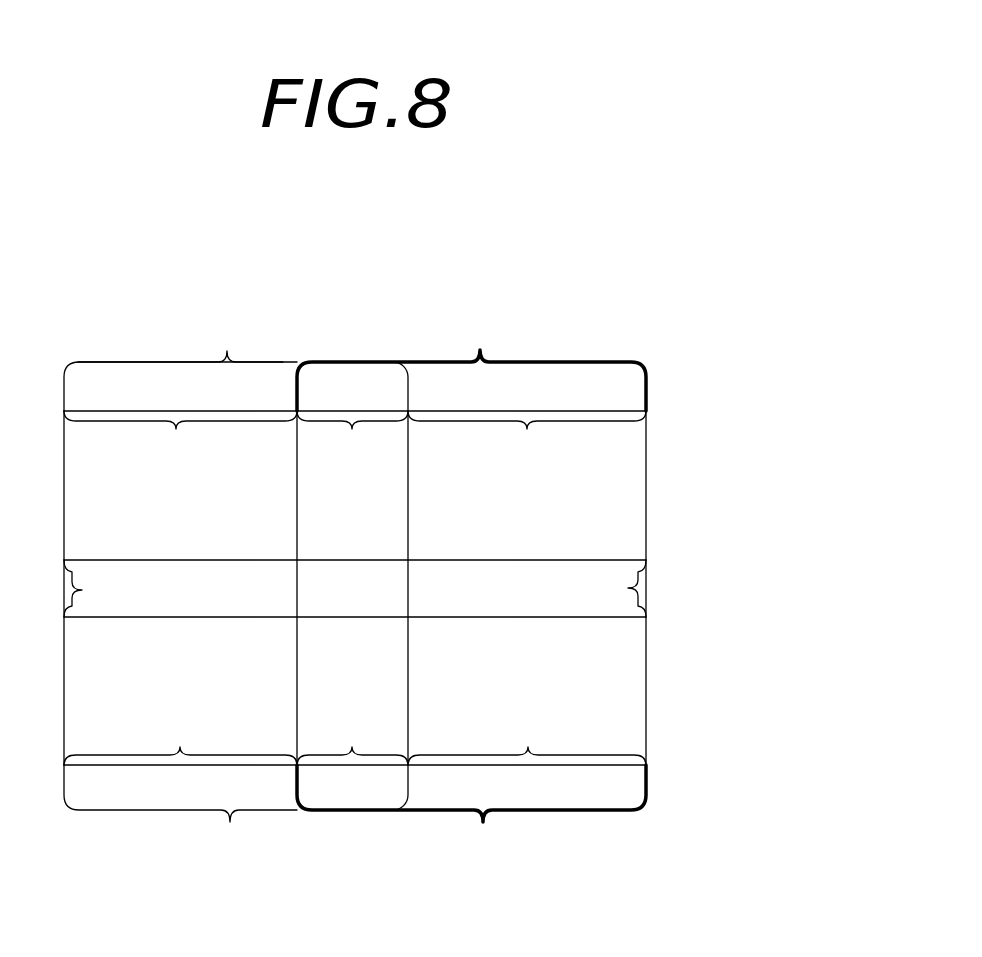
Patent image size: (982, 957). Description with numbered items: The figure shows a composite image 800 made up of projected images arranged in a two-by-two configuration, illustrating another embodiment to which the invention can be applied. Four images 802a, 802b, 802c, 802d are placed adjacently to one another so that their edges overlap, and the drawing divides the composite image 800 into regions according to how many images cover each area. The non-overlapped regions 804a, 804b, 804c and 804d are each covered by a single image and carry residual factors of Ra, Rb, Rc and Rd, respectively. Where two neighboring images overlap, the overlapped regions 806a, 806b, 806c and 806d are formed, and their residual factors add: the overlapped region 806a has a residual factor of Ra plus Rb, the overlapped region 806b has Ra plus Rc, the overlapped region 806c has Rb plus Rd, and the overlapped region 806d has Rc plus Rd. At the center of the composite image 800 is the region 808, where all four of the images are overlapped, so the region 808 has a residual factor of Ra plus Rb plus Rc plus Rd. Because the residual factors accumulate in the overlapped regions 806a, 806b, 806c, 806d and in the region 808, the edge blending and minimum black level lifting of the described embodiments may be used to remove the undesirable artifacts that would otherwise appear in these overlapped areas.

The composite image 800 is at (648, 430).
The first image 802a is at (227, 351).
The second image 802b is at (480, 350).
The third image 802c is at (230, 822).
The fourth image 802d is at (483, 822).
The non-overlapped region 804a is at (176, 429).
The non-overlapped region 804b is at (527, 429).
The non-overlapped region 804c is at (180, 747).
The non-overlapped region 804d is at (528, 747).
The overlapped region 806a is at (352, 429).
The overlapped region 806b is at (82, 590).
The overlapped region 806c is at (628, 588).
The overlapped region 806d is at (352, 747).
The four-image overlapped region 808 is at (388, 602).